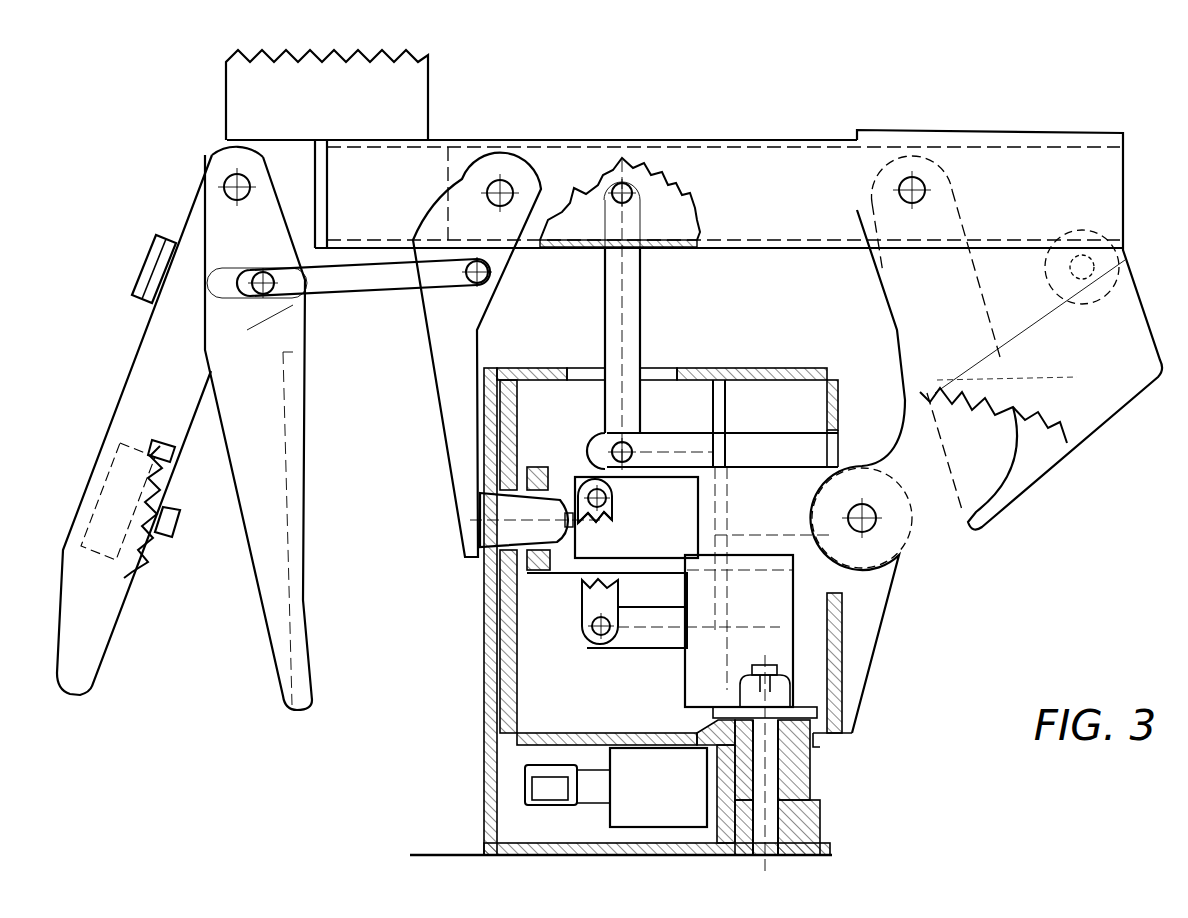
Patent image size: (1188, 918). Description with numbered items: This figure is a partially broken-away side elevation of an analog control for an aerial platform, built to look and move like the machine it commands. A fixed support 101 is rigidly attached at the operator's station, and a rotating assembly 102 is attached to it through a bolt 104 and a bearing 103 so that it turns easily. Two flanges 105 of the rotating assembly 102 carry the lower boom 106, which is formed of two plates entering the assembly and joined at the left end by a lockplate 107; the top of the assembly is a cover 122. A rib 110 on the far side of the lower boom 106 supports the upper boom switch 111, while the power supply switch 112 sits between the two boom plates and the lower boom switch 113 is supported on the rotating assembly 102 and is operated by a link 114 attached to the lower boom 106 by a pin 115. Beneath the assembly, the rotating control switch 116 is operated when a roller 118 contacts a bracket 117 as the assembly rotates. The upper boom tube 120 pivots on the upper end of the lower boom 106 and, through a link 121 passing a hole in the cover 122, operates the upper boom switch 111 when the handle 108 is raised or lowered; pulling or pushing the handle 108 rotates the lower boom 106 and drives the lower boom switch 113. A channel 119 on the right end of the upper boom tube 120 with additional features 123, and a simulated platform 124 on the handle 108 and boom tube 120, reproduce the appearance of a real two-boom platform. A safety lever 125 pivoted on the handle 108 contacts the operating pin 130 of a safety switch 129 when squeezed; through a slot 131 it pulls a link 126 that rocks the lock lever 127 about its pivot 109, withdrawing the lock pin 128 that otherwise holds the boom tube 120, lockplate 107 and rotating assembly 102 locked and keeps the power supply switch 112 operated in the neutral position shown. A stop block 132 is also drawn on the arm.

The fixed support 101 is at (822, 833).
The rotating assembly 102 is at (841, 685).
The bearing 103 is at (797, 777).
The bolt 104 is at (775, 857).
The flanges 105 is at (895, 603).
The lower boom 106 is at (955, 192).
The lockplate 107 is at (552, 562).
The handle 108 is at (128, 386).
The pivot 109 is at (497, 178).
The rib 110 is at (714, 400).
The upper boom switch 111 is at (714, 426).
The power supply switch 112 is at (623, 562).
The lower boom switch 113 is at (683, 677).
The link 114 is at (581, 604).
The pin 115 is at (608, 496).
The rotating control switch 116 is at (657, 827).
The bracket 117 is at (577, 820).
The roller 118 is at (548, 800).
The channel 119 is at (904, 130).
The upper boom tube 120 is at (702, 139).
The link 121 is at (642, 308).
The cover 122 is at (719, 368).
The additional features 123 is at (1036, 345).
The simulated platform 124 is at (430, 86).
The safety lever 125 is at (311, 562).
The link 126 is at (330, 294).
The lock lever 127 is at (433, 362).
The lock pin 128 is at (480, 537).
The safety switch 129 is at (170, 450).
The operating pin 130 is at (175, 528).
The slot 131 is at (230, 318).
The stop block 132 is at (140, 262).